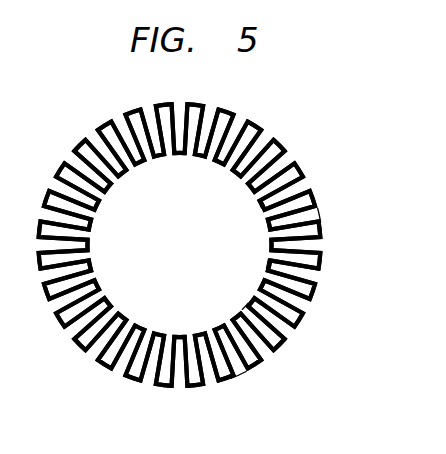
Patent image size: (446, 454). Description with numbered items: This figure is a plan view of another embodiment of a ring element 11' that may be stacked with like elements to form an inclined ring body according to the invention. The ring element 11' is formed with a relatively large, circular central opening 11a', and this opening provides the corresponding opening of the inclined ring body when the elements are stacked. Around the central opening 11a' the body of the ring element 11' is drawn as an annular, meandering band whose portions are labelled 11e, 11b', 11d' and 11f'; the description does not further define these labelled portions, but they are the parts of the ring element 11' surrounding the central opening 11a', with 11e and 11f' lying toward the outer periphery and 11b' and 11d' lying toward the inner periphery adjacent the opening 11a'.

The ring element 11' is at (207, 234).
The circular central opening 11a' is at (308, 186).
The outer peripheral web 11e is at (322, 214).
The inner peripheral web 11b' is at (326, 269).
The inner connecting web 11d' is at (285, 333).
The outer connecting web 11f' is at (257, 396).